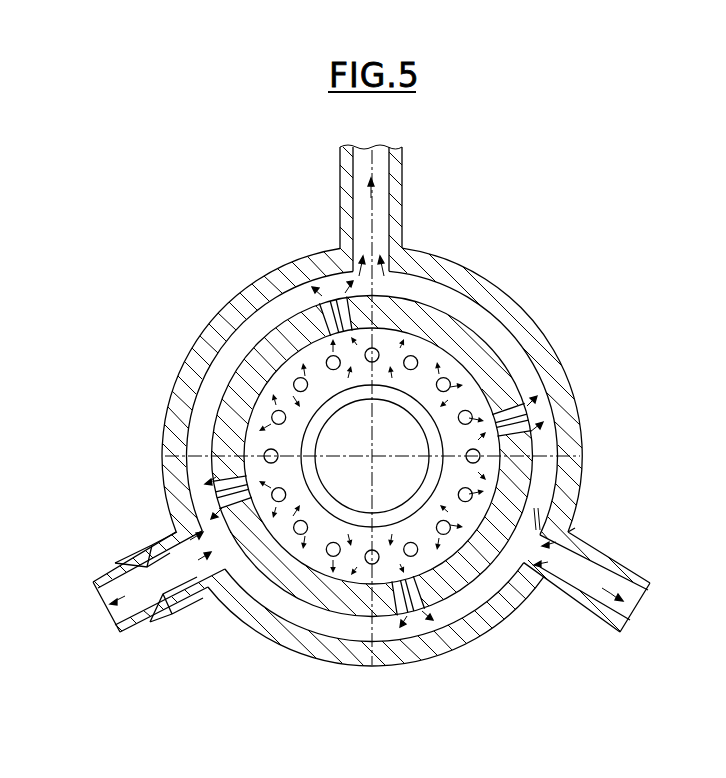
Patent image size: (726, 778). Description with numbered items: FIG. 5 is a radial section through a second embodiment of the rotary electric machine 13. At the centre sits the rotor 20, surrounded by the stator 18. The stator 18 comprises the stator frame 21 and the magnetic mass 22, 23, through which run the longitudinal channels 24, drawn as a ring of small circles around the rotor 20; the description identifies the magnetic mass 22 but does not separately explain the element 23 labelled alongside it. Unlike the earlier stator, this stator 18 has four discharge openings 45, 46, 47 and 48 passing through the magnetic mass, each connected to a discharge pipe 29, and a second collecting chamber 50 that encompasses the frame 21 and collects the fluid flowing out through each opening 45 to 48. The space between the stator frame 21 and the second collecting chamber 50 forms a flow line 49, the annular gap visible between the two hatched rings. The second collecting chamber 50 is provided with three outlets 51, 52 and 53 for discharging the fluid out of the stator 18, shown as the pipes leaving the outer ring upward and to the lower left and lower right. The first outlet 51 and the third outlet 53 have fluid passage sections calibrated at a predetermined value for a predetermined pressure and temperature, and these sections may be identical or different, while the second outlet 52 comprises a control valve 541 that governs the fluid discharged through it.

The rotary electric machine 13 is at (576, 272).
The stator 18 is at (492, 633).
The rotor 20 is at (318, 298).
The stator frame 21 is at (338, 604).
The magnetic mass 22 is at (283, 366).
The inner annular wall section 23 is at (372, 456).
The longitudinal channels 24 is at (270, 413).
The discharge pipe 29 is at (485, 497).
The discharge opening 45 is at (348, 414).
The discharge opening 46 is at (213, 492).
The discharge opening 47 is at (418, 615).
The discharge opening 48 is at (538, 420).
The flow line 49 is at (562, 440).
The second collecting chamber 50 is at (562, 344).
The first outlet 51 is at (384, 158).
The second outlet 52 is at (105, 604).
The third outlet 53 is at (640, 594).
The control valve 541 is at (163, 612).